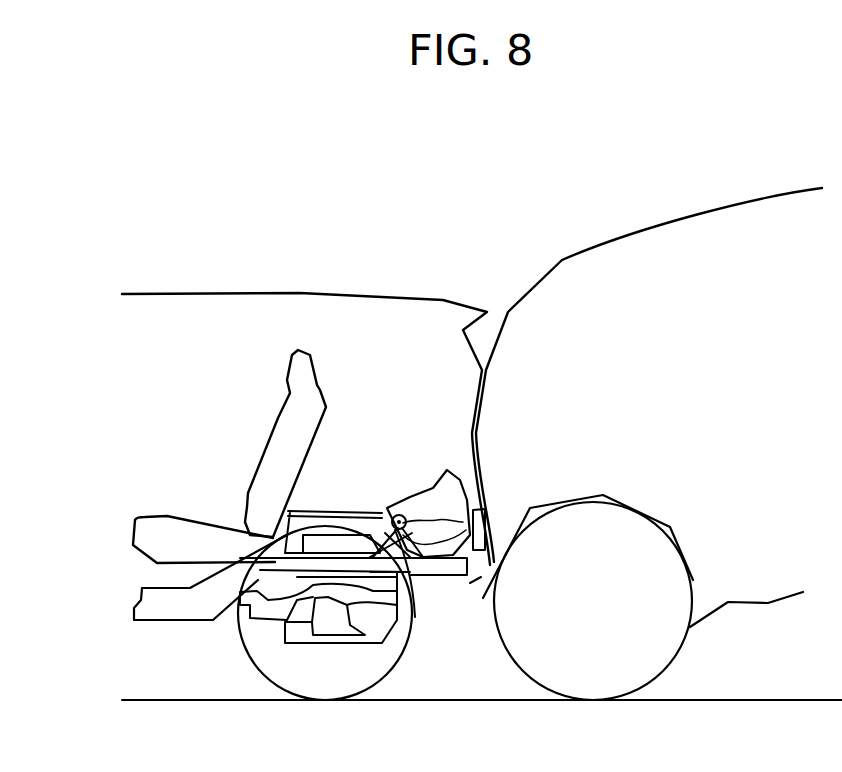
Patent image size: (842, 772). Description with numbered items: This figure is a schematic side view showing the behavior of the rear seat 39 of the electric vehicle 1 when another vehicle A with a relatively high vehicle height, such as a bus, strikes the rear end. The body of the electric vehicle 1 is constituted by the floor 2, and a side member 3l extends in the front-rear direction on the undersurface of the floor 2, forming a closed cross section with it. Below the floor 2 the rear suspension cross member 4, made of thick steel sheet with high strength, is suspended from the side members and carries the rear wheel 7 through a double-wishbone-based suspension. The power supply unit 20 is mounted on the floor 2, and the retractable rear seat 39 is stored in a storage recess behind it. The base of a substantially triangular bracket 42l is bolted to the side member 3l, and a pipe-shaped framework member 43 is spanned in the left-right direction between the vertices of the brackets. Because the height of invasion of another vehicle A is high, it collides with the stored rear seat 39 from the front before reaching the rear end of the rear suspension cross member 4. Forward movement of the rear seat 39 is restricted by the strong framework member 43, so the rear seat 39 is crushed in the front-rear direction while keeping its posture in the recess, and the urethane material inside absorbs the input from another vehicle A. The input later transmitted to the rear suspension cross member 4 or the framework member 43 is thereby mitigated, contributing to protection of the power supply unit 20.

The electric vehicle 1 is at (354, 294).
The another vehicle A is at (607, 243).
The floor 2 is at (163, 588).
The left side member 3l is at (167, 622).
The power supply unit 20 is at (325, 520).
The left bracket 42l is at (363, 523).
The framework member 43 is at (400, 513).
The rear seat 39 is at (427, 487).
The rear wheel 7 is at (257, 670).
The rear suspension cross member 4 is at (330, 647).